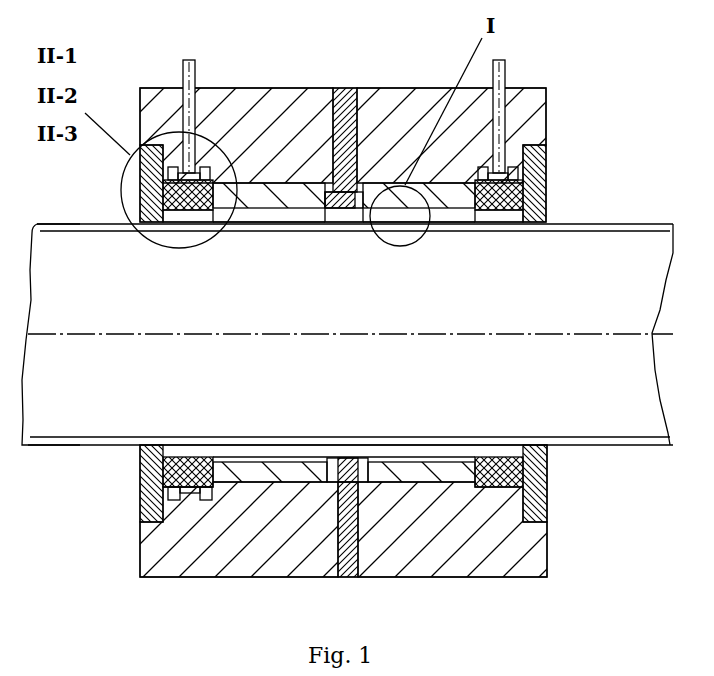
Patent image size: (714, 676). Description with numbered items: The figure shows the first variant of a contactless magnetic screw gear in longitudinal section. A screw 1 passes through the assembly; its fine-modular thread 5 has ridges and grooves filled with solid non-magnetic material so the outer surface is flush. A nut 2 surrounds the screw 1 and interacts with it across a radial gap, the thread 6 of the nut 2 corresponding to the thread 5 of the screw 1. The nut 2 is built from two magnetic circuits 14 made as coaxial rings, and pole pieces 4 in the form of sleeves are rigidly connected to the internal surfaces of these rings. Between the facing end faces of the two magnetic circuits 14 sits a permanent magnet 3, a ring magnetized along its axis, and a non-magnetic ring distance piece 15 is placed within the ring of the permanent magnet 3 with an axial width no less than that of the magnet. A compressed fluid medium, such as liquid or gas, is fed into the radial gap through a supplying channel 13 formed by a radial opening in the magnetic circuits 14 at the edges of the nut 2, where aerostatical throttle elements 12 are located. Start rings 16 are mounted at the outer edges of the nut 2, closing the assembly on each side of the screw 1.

The screw 1 is at (540, 397).
The nut 2 is at (545, 117).
The permanent magnet 3 is at (352, 95).
The pole pieces 4 is at (227, 468).
The thread of the screw 5 is at (50, 447).
The thread of the nut 6 is at (450, 463).
The aerostatical throttle elements 12 is at (143, 508).
The supplying channel 13 is at (160, 90).
The magnetic circuits 14 is at (277, 130).
The non-magnetic ring distance piece 15 is at (333, 463).
The start rings 16 is at (543, 175).